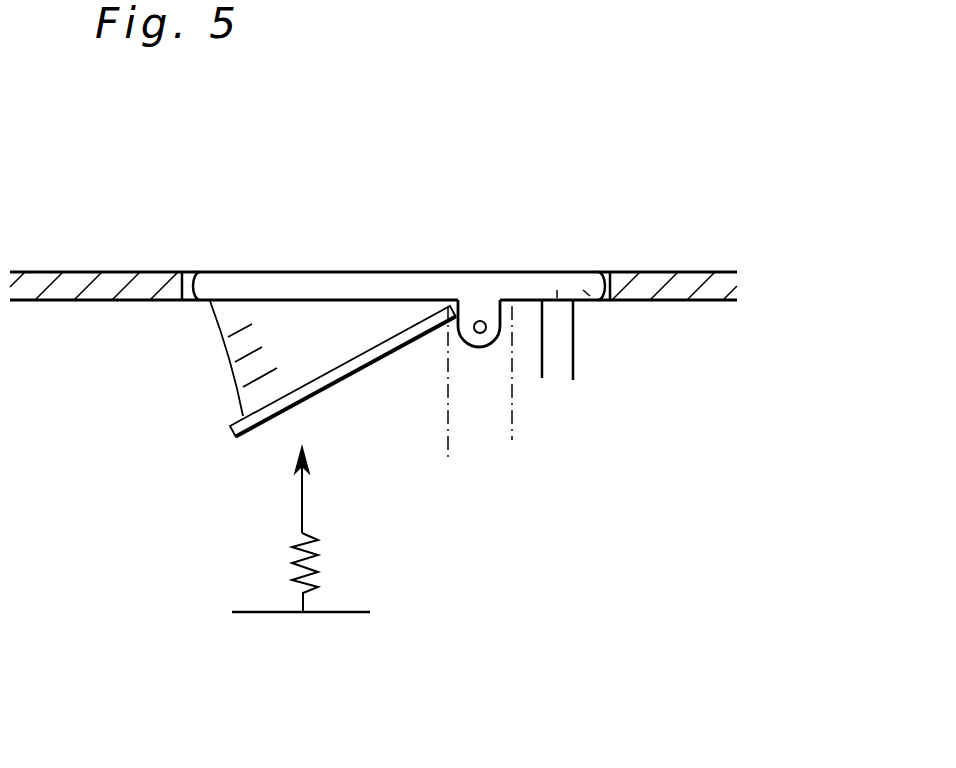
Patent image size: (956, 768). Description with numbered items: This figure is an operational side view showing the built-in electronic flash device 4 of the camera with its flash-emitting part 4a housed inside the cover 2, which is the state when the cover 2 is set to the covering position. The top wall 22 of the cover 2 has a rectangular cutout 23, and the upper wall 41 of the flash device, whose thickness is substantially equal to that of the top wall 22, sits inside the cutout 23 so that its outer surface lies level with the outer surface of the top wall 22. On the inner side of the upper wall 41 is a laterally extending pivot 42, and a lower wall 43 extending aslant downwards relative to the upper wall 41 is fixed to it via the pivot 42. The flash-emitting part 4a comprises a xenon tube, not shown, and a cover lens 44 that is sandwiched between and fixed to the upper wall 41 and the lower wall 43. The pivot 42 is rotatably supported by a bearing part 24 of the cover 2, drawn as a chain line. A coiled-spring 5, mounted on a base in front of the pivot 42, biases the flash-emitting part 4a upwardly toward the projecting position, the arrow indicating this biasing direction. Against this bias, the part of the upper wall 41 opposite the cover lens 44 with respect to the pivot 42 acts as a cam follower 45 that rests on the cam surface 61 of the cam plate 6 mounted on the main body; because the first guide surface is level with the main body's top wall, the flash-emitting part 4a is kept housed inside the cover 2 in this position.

The cover 2 is at (78, 272).
The top wall 22 is at (138, 292).
The rectangular cutout 23 is at (604, 272).
The upper wall 41 is at (330, 276).
The pivot 42 is at (484, 321).
The cam surface 61 is at (558, 296).
The cam follower 45 is at (583, 290).
The cam plate 6 is at (573, 363).
The bearing part 24 is at (513, 433).
The electronic flash device 4 is at (254, 419).
The lower wall 43 is at (345, 378).
The flash-emitting part 4a is at (332, 363).
The cover lens 44 is at (217, 357).
The coiled-spring 5 is at (318, 568).